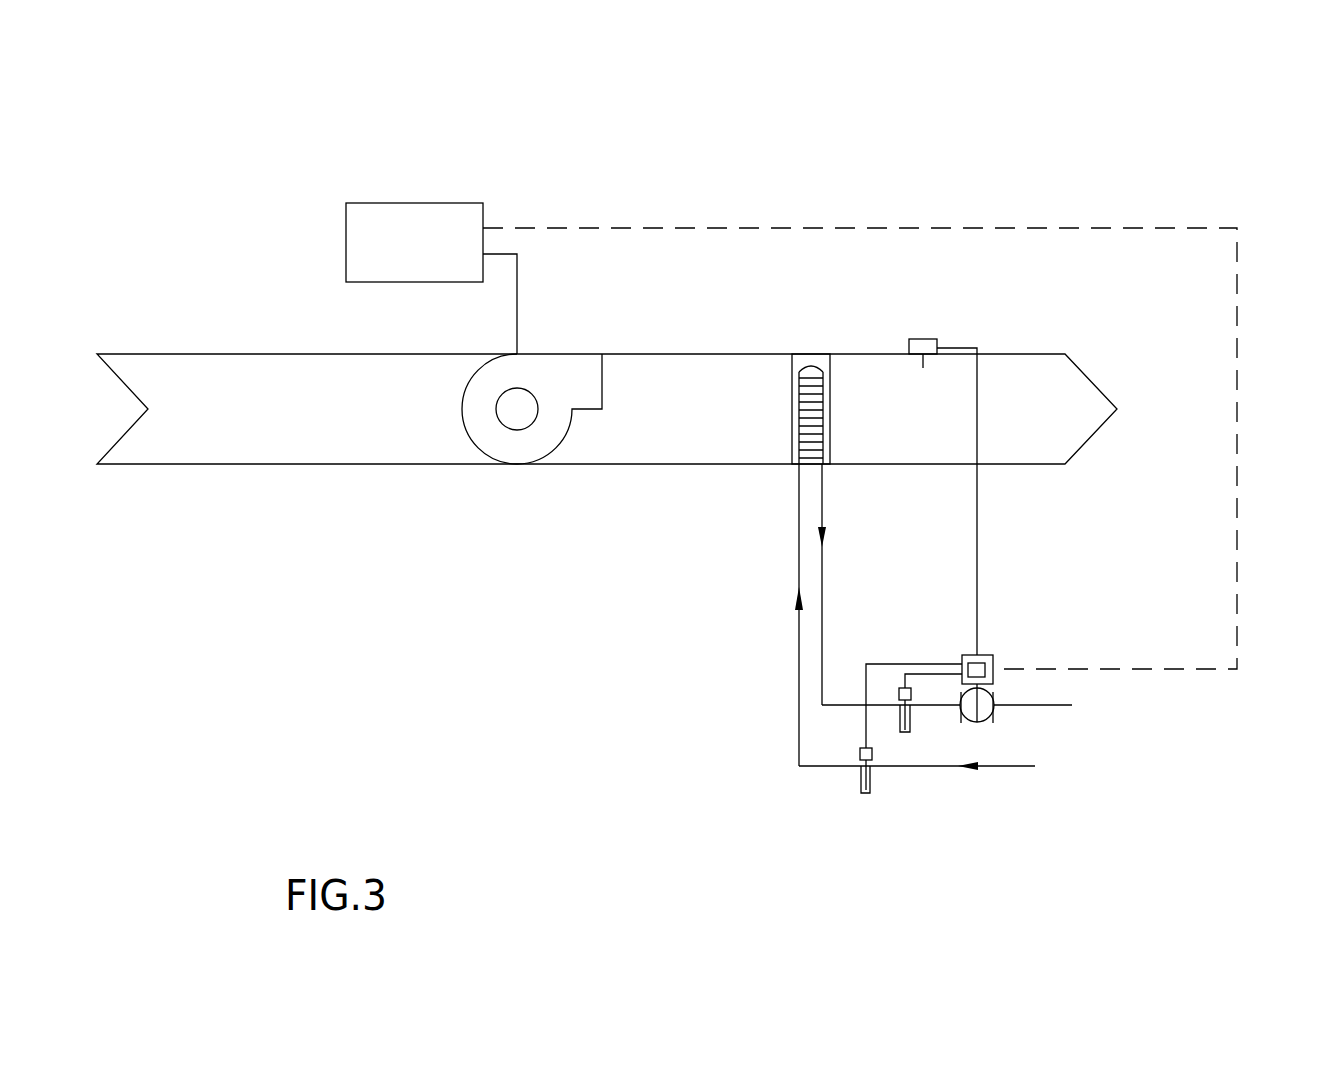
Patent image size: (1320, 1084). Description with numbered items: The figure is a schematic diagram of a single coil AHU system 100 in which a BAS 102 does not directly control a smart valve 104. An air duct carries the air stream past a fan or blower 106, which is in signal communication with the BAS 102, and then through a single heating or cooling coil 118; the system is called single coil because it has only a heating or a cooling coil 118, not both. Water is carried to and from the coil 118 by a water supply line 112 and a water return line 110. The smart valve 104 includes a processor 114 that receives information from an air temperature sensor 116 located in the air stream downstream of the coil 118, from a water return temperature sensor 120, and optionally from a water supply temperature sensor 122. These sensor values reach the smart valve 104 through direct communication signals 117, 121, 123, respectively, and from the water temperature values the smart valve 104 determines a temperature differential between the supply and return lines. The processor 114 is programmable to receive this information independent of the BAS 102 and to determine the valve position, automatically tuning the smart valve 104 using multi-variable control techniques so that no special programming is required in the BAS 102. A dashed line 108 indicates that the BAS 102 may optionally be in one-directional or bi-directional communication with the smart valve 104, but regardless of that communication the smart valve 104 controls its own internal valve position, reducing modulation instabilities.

The single coil AHU system 100 is at (1068, 148).
The BAS 102 is at (343, 243).
The smart valve 104 is at (1003, 638).
The fan or blower 106 is at (477, 445).
The dashed line 108 is at (1238, 366).
The water return line 110 is at (1062, 708).
The water supply line 112 is at (1022, 770).
The processor 114 is at (997, 663).
The air temperature sensor 116 is at (923, 339).
The direct communication signal 117 is at (979, 532).
The heating or cooling coil 118 is at (805, 345).
The water return temperature sensor 120 is at (928, 710).
The direct communication signal 121 is at (938, 660).
The water supply temperature sensor 122 is at (858, 755).
The direct communication signal 123 is at (885, 660).